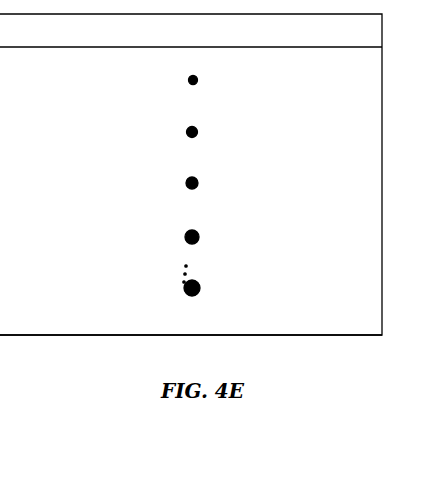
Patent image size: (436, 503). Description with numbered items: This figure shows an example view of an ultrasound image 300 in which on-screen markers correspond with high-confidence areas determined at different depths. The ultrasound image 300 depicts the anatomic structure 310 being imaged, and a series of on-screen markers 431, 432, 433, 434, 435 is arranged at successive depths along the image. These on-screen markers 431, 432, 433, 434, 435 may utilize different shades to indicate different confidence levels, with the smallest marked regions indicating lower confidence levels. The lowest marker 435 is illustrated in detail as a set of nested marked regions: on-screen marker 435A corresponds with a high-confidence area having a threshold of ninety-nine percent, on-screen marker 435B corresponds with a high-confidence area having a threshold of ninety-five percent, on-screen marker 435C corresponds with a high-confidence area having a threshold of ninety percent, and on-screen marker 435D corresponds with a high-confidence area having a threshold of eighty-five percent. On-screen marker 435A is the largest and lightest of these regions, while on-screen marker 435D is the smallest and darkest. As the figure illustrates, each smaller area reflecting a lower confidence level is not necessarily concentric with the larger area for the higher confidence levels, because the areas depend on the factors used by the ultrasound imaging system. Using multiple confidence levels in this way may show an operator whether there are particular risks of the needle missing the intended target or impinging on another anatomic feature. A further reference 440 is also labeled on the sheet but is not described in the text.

The ultrasound image 300 is at (332, 35).
The anatomic structure 310 is at (362, 67).
The on-screen marker 431 is at (198, 80).
The on-screen marker 432 is at (198, 131).
The on-screen marker 433 is at (199, 185).
The on-screen marker 434 is at (200, 237).
The on-screen marker 435 is at (202, 288).
The on-screen marker 435A is at (185, 267).
The on-screen marker 435B is at (184, 275).
The on-screen marker 435C is at (183, 283).
The on-screen marker 435D is at (193, 292).
The wafer 440 is at (434, 374).